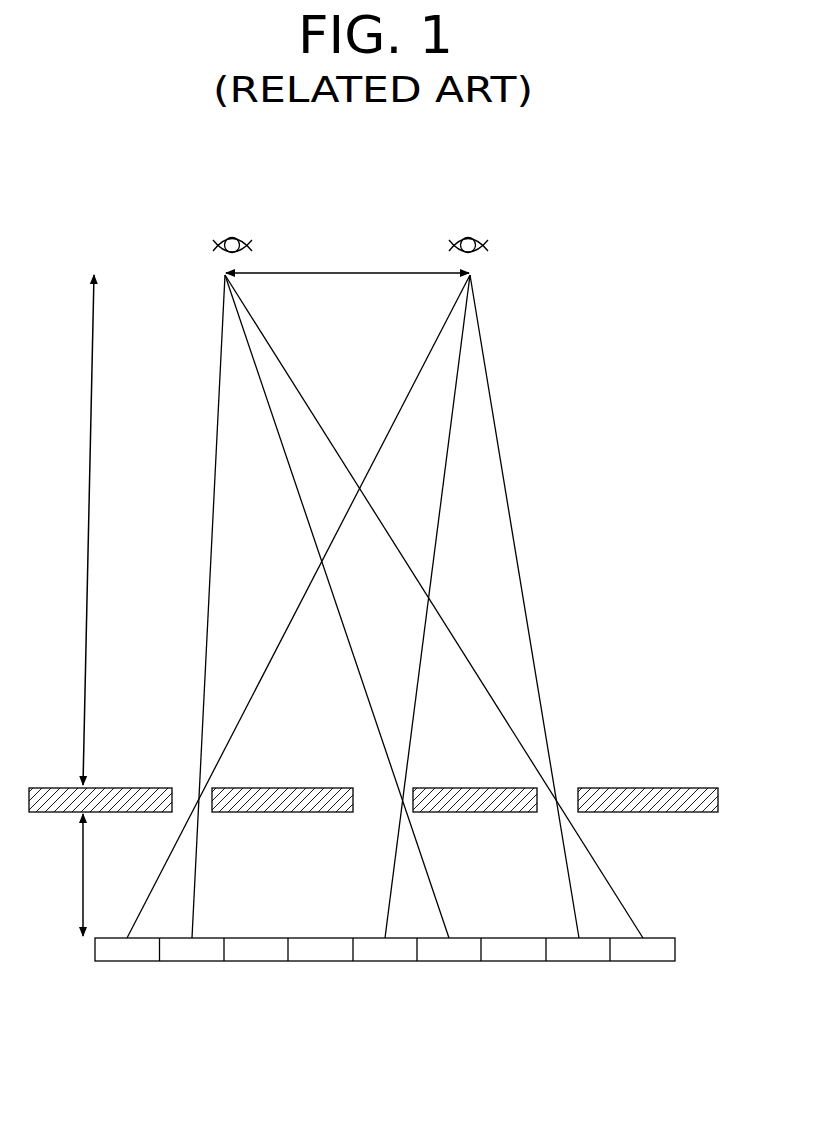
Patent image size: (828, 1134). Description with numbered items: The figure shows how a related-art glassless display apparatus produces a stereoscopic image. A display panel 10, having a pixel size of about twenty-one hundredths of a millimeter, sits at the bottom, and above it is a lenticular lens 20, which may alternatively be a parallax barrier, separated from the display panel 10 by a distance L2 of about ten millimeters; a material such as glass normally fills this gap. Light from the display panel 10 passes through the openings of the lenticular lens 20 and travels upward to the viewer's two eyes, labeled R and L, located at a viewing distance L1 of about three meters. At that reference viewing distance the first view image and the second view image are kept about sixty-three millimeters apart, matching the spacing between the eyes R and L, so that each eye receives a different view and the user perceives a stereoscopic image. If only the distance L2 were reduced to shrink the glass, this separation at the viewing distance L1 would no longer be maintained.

The display panel 10 is at (661, 937).
The lenticular lens 20 is at (688, 787).
The viewing distance L1 is at (74, 530).
The distance between display panel and lenticular lens L2 is at (69, 875).
The right eye R is at (232, 226).
The left eye L is at (468, 226).